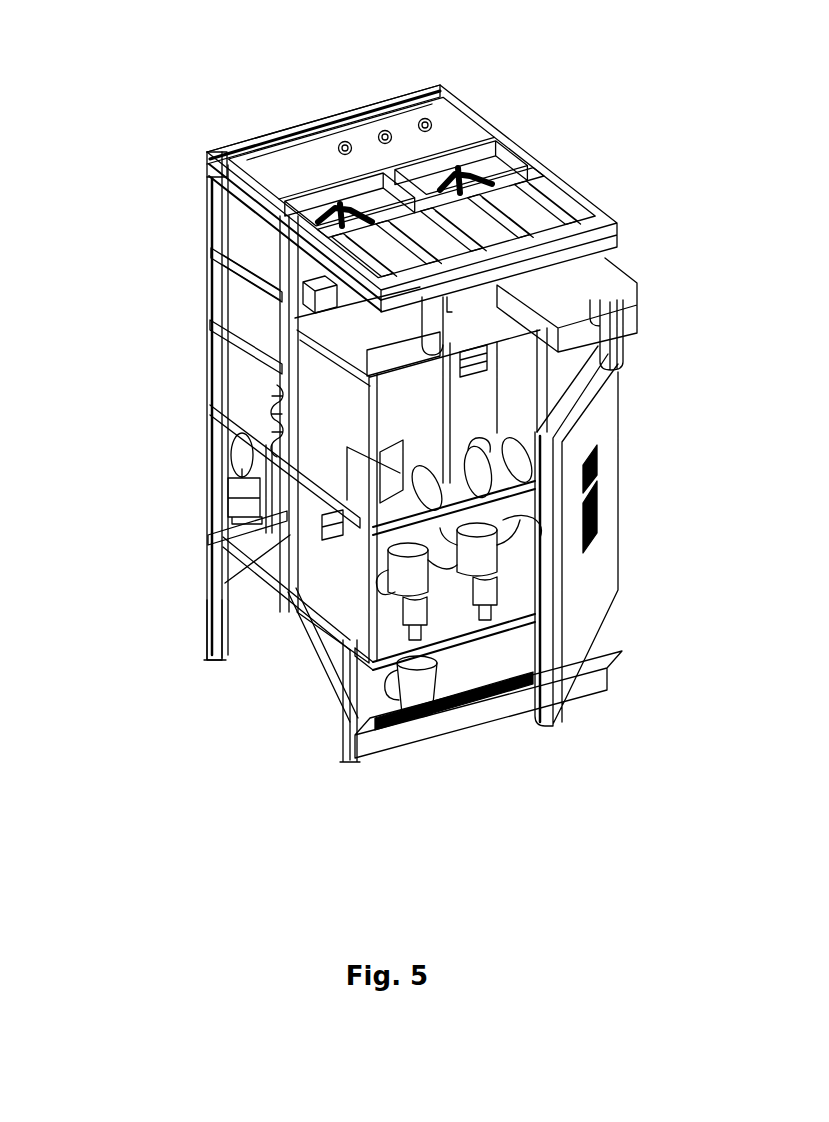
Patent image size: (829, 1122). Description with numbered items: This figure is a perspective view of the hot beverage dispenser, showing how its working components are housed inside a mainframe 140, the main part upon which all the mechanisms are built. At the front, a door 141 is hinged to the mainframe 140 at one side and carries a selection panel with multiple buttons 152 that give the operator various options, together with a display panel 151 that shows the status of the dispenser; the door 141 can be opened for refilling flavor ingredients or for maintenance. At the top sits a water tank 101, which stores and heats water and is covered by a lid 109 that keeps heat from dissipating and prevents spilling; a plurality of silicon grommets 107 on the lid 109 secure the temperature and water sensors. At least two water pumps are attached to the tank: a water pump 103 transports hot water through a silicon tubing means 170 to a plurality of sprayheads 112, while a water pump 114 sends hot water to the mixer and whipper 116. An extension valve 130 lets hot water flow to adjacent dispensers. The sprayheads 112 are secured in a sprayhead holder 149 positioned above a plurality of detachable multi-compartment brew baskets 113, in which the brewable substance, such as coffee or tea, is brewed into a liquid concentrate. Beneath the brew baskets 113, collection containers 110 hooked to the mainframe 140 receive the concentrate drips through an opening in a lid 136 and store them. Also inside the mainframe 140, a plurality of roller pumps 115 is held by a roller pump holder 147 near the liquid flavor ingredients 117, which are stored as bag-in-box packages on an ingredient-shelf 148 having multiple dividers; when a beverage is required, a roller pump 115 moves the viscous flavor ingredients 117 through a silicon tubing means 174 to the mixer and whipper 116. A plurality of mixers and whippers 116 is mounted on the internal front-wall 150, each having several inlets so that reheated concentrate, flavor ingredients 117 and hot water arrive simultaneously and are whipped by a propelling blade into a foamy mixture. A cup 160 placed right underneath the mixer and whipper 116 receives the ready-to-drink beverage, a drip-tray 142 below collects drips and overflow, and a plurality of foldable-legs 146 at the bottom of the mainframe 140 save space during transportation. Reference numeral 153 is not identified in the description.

The water tank 101 is at (248, 242).
The water pump 103 is at (280, 405).
The silicon grommets 107 is at (425, 119).
The lid 109 is at (297, 173).
The collection container 110 is at (338, 303).
The sprayhead 112 is at (530, 213).
The multi-compartment brew basket 113 is at (597, 290).
The water pump 114 is at (245, 462).
The roller pump 115 is at (328, 548).
The mixer and whipper 116 is at (388, 725).
The flavor ingredients 117 is at (487, 412).
The extension valve 130 is at (222, 522).
The lid 136 is at (290, 272).
The mainframe 140 is at (208, 158).
The door 141 is at (597, 597).
The drip-tray 142 is at (460, 625).
The foldable-legs 146 is at (218, 615).
The roller pump holder 147 is at (325, 635).
The ingredient-shelf 148 is at (300, 522).
The sprayhead holder 149 is at (503, 175).
The internal front-wall 150 is at (443, 593).
The display panel 151 is at (600, 467).
The buttons 152 is at (600, 523).
The cabinet 153 is at (380, 358).
The cup 160 is at (417, 687).
The silicon tubing means 170 is at (467, 170).
The silicon tubing means 174 is at (353, 717).